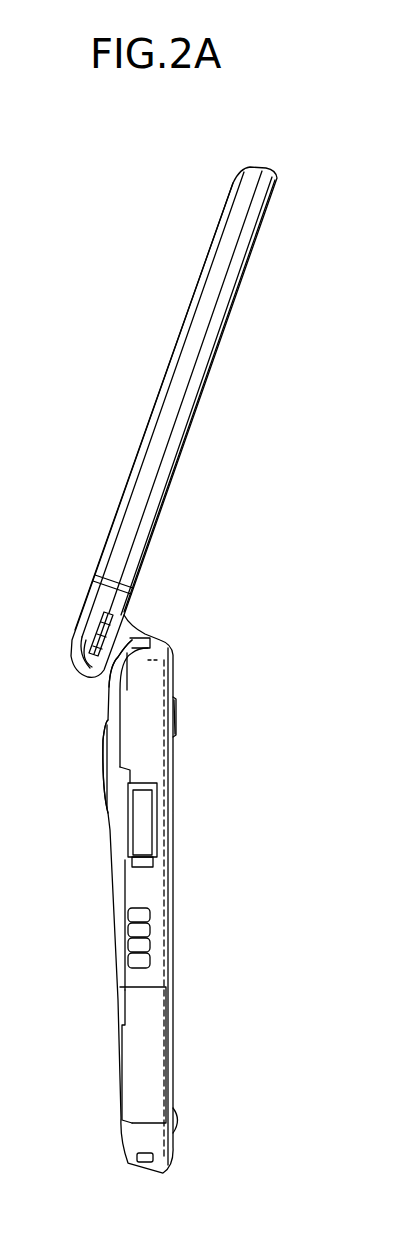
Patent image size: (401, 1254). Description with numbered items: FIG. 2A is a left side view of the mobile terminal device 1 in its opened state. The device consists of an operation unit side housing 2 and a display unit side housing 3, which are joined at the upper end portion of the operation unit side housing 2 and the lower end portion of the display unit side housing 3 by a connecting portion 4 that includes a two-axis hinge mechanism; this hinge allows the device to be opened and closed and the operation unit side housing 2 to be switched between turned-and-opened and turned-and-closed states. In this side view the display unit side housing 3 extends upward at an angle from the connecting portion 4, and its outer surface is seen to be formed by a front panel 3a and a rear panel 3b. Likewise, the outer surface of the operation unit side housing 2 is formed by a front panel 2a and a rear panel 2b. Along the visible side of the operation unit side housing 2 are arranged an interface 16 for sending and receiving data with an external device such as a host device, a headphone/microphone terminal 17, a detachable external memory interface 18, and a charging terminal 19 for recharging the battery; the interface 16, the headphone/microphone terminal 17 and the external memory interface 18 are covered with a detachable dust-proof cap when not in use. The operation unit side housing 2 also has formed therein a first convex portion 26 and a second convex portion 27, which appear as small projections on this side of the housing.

The mobile terminal device 1 is at (279, 164).
The operation unit side housing 2 is at (139, 894).
The front panel 2a is at (178, 713).
The rear panel 2b is at (105, 698).
The display unit side housing 3 is at (194, 422).
The front panel 3a is at (257, 243).
The rear panel 3b is at (215, 227).
The connecting portion 4 is at (141, 608).
The interface 16 is at (157, 1023).
The headphone/microphone terminal 17 is at (147, 820).
The external memory interface 18 is at (117, 812).
The charging terminal 19 is at (159, 931).
The first convex portion 26 is at (178, 1118).
The second convex portion 27 is at (177, 726).